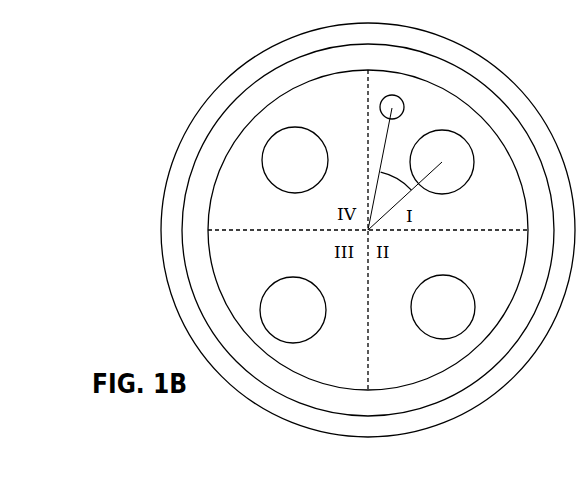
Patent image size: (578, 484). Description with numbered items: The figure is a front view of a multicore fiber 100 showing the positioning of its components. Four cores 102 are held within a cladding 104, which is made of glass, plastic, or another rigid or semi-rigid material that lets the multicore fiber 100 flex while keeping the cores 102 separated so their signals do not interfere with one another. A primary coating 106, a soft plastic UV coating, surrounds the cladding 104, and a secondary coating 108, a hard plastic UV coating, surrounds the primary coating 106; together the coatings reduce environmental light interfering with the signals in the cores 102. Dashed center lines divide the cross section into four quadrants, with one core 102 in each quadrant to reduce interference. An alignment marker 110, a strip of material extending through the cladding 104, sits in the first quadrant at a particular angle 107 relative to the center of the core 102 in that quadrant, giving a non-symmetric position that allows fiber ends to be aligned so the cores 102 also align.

The multicore fiber 100 is at (182, 87).
The cores 102 is at (287, 192).
The cladding 104 is at (430, 370).
The primary coating 106 is at (205, 173).
The angle 107 is at (381, 172).
The secondary coating 108 is at (305, 48).
The alignment marker 110 is at (404, 104).